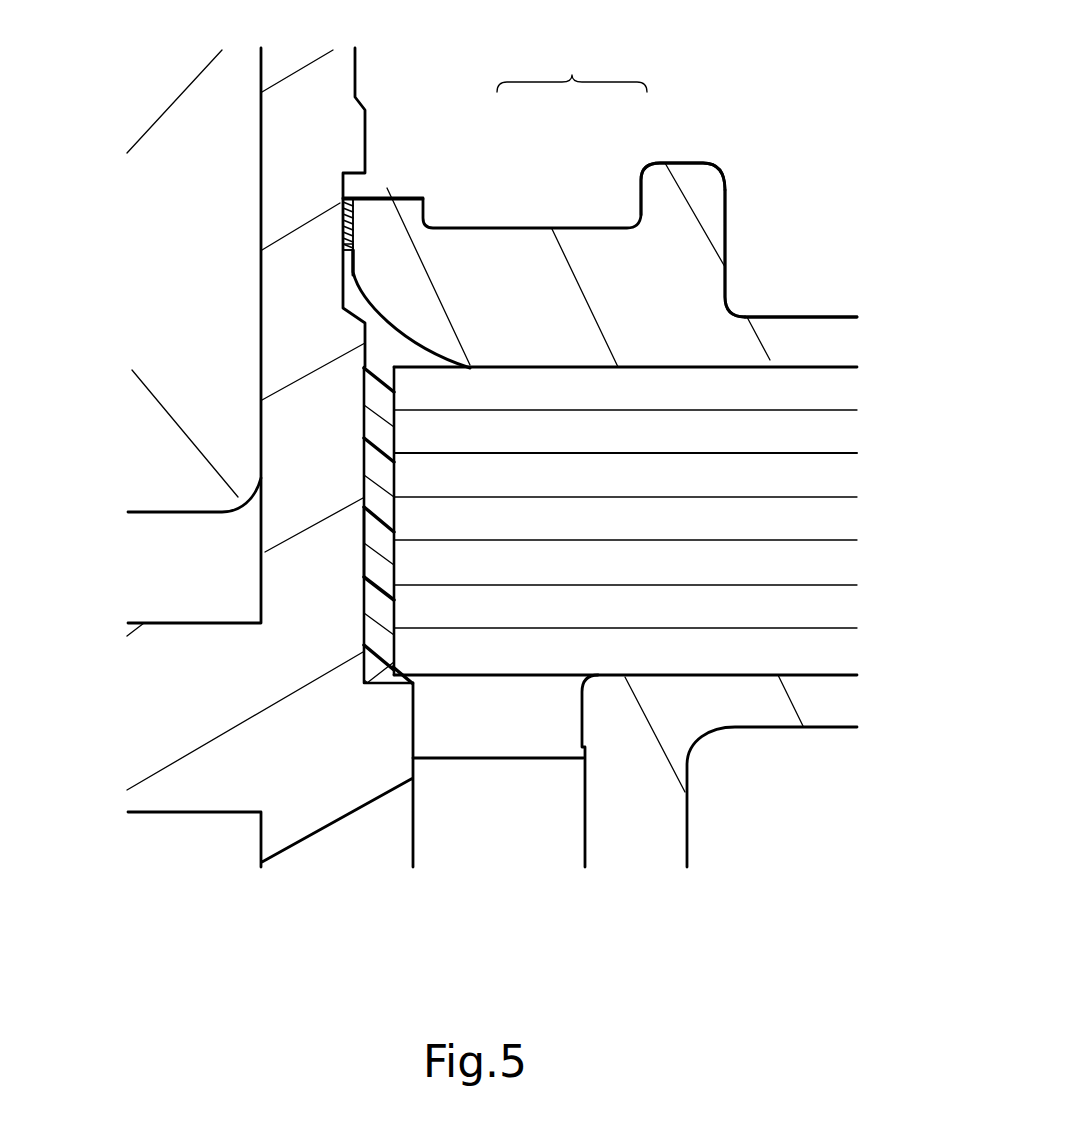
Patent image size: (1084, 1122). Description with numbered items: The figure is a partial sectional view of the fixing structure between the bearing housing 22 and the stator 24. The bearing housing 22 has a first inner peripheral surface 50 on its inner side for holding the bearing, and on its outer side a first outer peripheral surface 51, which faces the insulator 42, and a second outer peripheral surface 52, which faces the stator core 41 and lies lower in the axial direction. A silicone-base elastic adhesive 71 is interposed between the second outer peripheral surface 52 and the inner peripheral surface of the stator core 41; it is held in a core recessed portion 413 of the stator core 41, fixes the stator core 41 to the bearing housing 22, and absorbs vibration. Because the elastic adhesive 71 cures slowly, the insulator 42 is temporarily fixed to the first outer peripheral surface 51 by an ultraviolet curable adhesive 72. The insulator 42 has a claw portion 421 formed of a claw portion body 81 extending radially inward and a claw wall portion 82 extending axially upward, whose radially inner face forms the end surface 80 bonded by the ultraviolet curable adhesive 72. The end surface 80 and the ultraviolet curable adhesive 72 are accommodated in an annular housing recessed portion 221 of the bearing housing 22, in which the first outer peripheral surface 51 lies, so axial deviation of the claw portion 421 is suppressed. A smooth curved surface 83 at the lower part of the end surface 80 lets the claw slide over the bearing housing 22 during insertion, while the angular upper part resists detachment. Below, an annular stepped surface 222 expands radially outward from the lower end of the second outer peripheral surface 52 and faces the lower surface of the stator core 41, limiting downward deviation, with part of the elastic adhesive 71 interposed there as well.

The first inner peripheral surface 50 is at (260, 137).
The first outer peripheral surface 51 is at (352, 235).
The claw portion 421 is at (572, 66).
The claw wall portion 82 is at (400, 217).
The claw portion body 81 is at (527, 270).
The stator 24 is at (737, 140).
The second outer peripheral surface 52 is at (397, 428).
The insulator 42 is at (820, 345).
The end surface 80 is at (342, 200).
The ultraviolet curable adhesive 72 is at (343, 247).
The housing recessed portion 221 is at (362, 272).
The curved surface 83 is at (365, 318).
The core recessed portion 413 is at (388, 468).
The elastic adhesive 71 is at (377, 540).
The stepped surface 222 is at (397, 667).
The stator core 41 is at (695, 620).
The bearing housing 22 is at (317, 770).